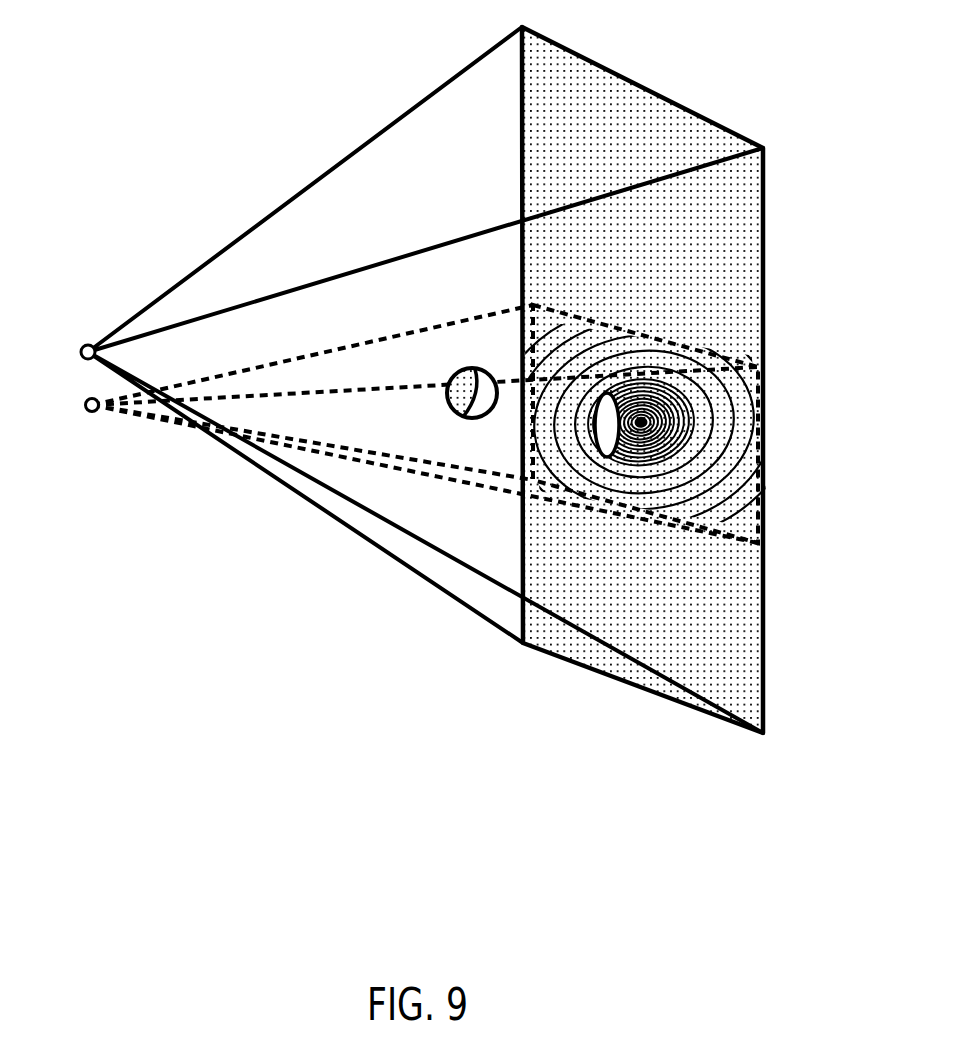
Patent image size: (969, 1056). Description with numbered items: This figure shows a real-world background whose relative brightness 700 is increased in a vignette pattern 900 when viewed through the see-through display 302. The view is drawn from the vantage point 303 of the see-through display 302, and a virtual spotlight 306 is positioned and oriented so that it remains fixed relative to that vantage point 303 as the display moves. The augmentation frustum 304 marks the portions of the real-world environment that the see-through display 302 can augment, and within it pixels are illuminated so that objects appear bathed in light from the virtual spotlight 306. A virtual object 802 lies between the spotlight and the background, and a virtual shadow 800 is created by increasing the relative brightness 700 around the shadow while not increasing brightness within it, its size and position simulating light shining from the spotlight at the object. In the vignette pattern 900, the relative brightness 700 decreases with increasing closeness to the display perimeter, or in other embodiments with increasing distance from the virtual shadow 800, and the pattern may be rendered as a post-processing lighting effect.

The see-through display 302 is at (87, 413).
The vantage point 303 is at (90, 411).
The augmentation frustum 304 is at (418, 331).
The virtual spotlight 306 is at (90, 361).
The relative brightness 700 is at (657, 92).
The virtual shadow 800 is at (608, 423).
The virtual object 802 is at (460, 373).
The vignette pattern 900 is at (778, 376).